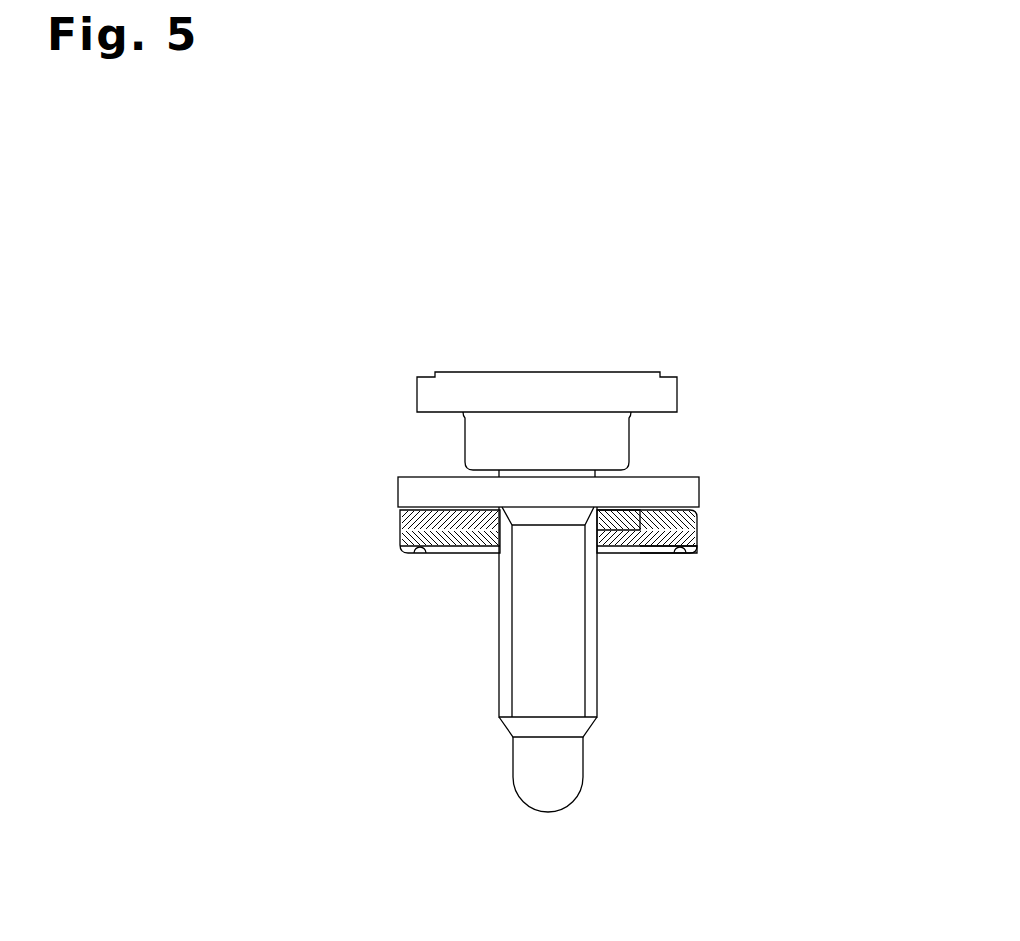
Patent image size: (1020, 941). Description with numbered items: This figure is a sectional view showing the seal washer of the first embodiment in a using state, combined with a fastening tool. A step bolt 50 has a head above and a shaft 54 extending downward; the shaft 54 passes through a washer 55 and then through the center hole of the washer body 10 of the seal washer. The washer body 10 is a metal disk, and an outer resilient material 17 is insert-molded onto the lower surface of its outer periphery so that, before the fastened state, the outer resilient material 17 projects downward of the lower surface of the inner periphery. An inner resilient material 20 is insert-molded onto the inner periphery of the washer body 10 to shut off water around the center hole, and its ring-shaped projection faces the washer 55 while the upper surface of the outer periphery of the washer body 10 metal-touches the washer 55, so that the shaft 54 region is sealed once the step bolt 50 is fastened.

The step bolt 50 is at (568, 393).
The inner resilient material 20 is at (628, 510).
The washer 55 is at (682, 493).
The washer body 10 is at (697, 518).
The outer resilient material 17 is at (697, 538).
The shaft 54 is at (563, 633).